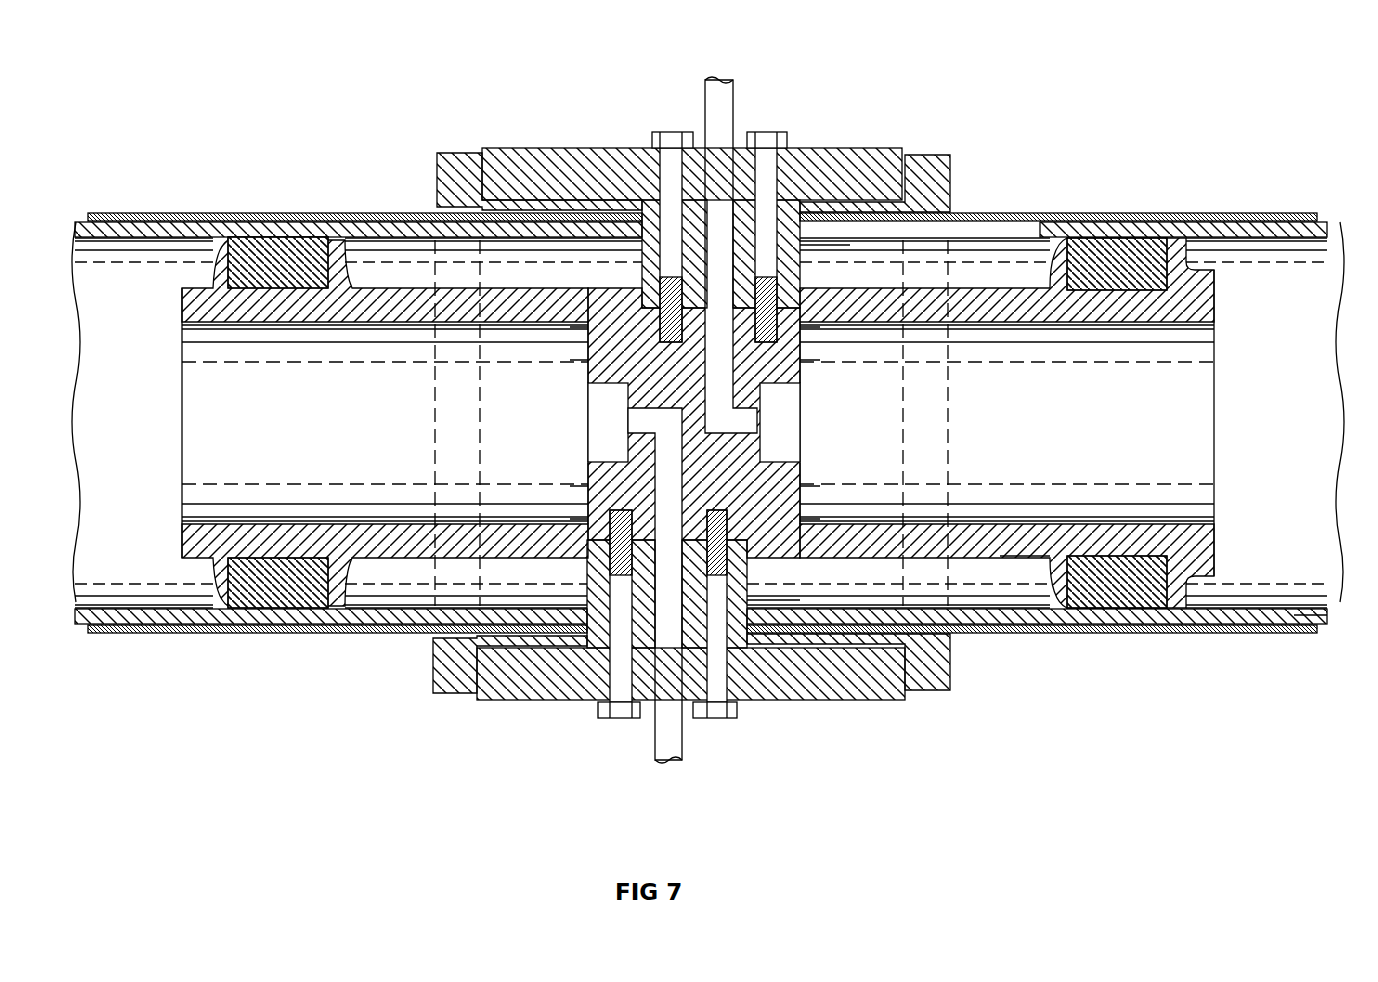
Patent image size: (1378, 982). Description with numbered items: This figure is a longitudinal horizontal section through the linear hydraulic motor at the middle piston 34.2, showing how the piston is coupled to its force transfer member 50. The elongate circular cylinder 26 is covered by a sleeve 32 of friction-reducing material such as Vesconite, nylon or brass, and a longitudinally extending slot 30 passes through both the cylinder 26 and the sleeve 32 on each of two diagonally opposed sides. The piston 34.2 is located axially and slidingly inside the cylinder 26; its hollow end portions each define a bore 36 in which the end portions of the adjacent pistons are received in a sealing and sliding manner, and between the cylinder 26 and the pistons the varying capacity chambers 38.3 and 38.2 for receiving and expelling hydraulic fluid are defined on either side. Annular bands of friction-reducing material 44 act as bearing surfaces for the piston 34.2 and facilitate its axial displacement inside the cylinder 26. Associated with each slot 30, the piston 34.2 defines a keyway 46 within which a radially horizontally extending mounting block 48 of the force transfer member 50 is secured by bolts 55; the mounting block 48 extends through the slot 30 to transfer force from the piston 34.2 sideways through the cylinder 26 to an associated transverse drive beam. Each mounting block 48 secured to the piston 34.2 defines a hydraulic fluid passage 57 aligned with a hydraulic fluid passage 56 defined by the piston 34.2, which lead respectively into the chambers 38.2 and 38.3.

The cylinder 26 is at (1294, 615).
The slot 30 is at (997, 230).
The sleeve 32 is at (1165, 213).
The piston 34.2 is at (988, 540).
The bore 36 is at (258, 329).
The varying capacity chamber 38.2 is at (1082, 441).
The varying capacity chamber 38.3 is at (382, 447).
The annular band of friction-reducing material 44 is at (297, 592).
The keyway 46 is at (803, 312).
The mounting block 48 is at (803, 260).
The force transfer member 50 is at (553, 140).
The bolt 55 is at (668, 138).
The hydraulic fluid passage 56 is at (718, 353).
The hydraulic fluid passage 57 is at (733, 97).